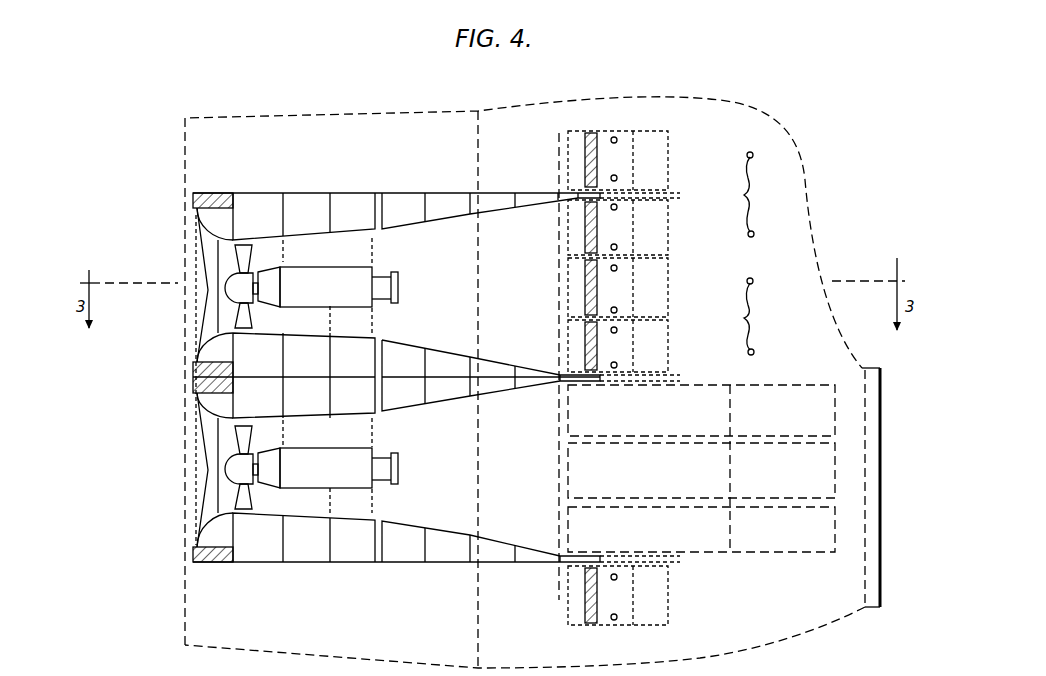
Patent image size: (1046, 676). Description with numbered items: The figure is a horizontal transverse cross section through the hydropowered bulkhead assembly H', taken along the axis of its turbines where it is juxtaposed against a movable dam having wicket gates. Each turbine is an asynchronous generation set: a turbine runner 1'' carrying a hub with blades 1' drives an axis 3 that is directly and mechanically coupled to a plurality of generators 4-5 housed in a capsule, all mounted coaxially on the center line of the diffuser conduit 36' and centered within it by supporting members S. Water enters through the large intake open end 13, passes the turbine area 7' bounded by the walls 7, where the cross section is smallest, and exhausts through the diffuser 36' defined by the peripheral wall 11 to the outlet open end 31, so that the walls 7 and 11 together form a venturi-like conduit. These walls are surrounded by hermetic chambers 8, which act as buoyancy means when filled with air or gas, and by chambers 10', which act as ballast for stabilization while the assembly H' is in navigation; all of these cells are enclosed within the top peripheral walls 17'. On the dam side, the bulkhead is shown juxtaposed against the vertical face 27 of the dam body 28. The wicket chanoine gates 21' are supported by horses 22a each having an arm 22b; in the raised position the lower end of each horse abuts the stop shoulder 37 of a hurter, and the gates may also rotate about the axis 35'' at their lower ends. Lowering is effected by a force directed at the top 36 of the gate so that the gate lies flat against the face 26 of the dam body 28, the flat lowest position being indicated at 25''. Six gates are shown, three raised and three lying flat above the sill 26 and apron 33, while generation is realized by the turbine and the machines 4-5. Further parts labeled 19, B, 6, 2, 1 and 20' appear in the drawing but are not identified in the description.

The bulkhead assembly H' is at (134, 172).
The housing outline 19 is at (308, 156).
The vertical face 27 is at (512, 159).
The bulkhead B is at (205, 206).
The air inlet 6 is at (205, 320).
The wall 7 is at (195, 377).
The intake open end 13 is at (185, 284).
The chambers 8 is at (263, 222).
The top peripheral walls 17' is at (360, 178).
The chambers 10' is at (516, 355).
The peripheral wall 11 is at (495, 212).
The supporting members S is at (283, 250).
The turbine runner 1'' is at (204, 278).
The blades 1' is at (252, 285).
The turbine area 7' is at (277, 320).
The axis 3 is at (273, 298).
The generators 4-5 is at (326, 377).
The diffuser conduit 36' is at (406, 379).
The hub 2 is at (245, 478).
The propeller 1 is at (251, 467).
The outlet open end 31 is at (560, 222).
The wicket chanoine gates 21' is at (566, 385).
The arm 22b is at (614, 378).
The flat lowest position 25'' is at (675, 378).
The dam body 28 is at (625, 125).
The face of the dam body 26 is at (755, 139).
The gate top 36 is at (689, 357).
The conduits 20' is at (616, 376).
The horses 22a is at (770, 598).
The axis 35'' is at (677, 518).
The stop shoulder 37 is at (822, 505).
The apron 33 is at (881, 572).